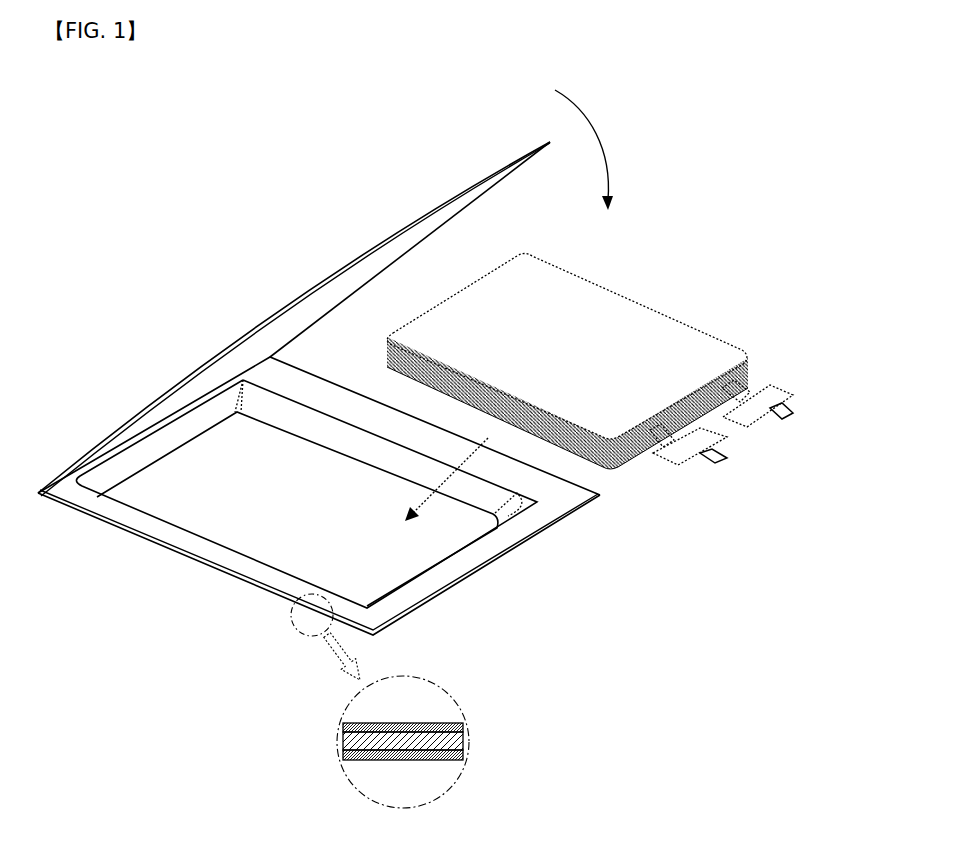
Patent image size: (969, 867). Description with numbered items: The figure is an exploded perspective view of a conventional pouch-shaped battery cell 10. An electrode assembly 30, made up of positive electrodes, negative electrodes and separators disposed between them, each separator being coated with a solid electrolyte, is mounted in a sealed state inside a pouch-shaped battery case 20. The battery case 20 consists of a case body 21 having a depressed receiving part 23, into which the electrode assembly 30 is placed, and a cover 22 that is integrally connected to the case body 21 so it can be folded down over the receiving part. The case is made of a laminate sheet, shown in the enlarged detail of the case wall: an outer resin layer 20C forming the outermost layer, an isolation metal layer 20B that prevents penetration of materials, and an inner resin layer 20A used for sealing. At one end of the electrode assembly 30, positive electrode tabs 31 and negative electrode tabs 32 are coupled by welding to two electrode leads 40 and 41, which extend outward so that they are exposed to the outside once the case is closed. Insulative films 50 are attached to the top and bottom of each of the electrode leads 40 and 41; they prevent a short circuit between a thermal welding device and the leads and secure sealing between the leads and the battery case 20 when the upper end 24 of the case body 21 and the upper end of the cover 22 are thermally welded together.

The pouch-shaped battery cell 10 is at (93, 141).
The pouch-shaped battery case 20 is at (136, 354).
The case body 21 is at (237, 578).
The cover 22 is at (348, 258).
The depressed receiving part 23 is at (183, 512).
The upper end of the case body 24 is at (463, 567).
The outer resin layer 20A is at (443, 760).
The isolation metal layer 20B is at (463, 740).
The inner resin layer 20C is at (445, 725).
The electrode assembly 30 is at (648, 325).
The positive electrode tabs 31 is at (748, 368).
The negative electrode tabs 32 is at (647, 455).
The electrode lead 40 is at (793, 405).
The electrode lead 41 is at (713, 457).
The insulative films 50 is at (700, 457).